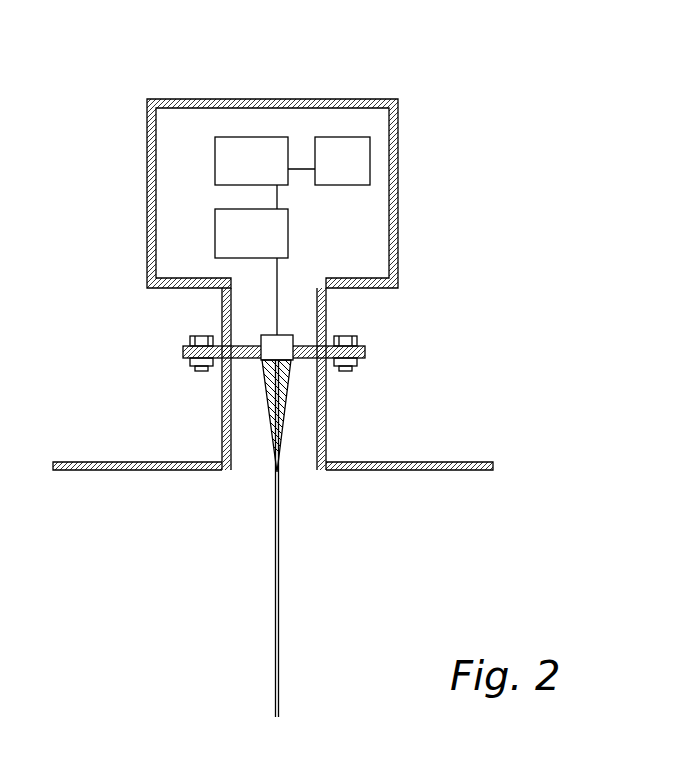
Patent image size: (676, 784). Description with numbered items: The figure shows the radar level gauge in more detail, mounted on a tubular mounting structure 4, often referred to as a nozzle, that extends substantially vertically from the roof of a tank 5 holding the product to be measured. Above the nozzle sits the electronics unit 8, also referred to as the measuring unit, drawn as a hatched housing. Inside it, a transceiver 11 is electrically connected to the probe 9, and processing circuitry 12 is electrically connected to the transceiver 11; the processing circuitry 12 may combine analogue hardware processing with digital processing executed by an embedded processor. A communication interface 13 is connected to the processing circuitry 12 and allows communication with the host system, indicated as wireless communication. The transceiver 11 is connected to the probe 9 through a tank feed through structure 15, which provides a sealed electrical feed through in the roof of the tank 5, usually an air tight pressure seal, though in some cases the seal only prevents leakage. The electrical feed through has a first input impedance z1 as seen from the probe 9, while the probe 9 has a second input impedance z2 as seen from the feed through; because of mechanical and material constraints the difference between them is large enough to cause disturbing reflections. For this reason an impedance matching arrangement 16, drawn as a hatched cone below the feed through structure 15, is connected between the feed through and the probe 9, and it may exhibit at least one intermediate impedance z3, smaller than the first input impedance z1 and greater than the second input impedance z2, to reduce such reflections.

The electronics unit 8 is at (203, 100).
The tubular mounting structure 4 is at (326, 400).
The tank 5 is at (428, 462).
The processing circuitry 12 is at (215, 163).
The communication interface 13 is at (343, 137).
The transceiver 11 is at (288, 232).
The tank feed through structure 15 is at (283, 336).
The impedance matching arrangement 16 is at (289, 415).
The probe 9 is at (279, 605).
The first input impedance z1 is at (263, 381).
The second input impedance z2 is at (275, 474).
The intermediate impedance z3 is at (290, 395).